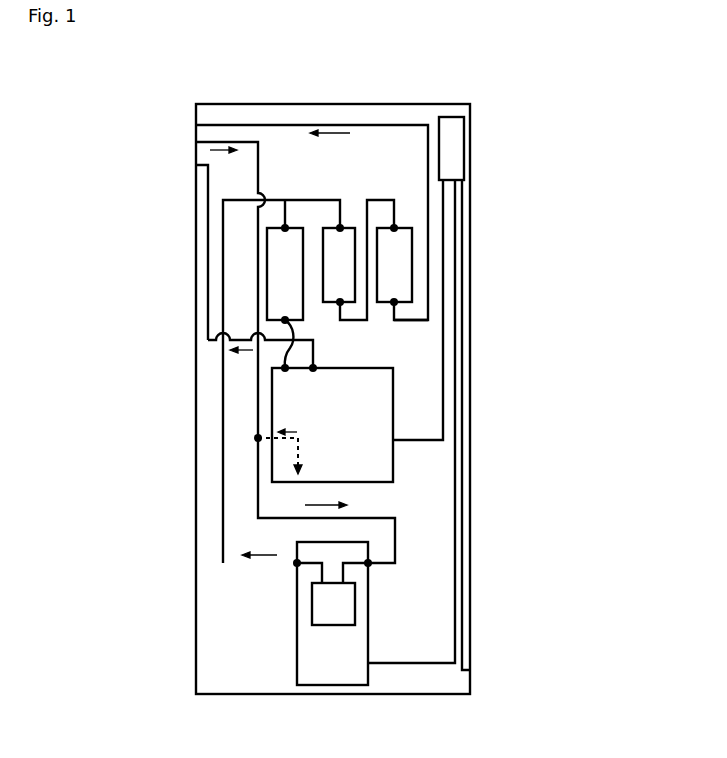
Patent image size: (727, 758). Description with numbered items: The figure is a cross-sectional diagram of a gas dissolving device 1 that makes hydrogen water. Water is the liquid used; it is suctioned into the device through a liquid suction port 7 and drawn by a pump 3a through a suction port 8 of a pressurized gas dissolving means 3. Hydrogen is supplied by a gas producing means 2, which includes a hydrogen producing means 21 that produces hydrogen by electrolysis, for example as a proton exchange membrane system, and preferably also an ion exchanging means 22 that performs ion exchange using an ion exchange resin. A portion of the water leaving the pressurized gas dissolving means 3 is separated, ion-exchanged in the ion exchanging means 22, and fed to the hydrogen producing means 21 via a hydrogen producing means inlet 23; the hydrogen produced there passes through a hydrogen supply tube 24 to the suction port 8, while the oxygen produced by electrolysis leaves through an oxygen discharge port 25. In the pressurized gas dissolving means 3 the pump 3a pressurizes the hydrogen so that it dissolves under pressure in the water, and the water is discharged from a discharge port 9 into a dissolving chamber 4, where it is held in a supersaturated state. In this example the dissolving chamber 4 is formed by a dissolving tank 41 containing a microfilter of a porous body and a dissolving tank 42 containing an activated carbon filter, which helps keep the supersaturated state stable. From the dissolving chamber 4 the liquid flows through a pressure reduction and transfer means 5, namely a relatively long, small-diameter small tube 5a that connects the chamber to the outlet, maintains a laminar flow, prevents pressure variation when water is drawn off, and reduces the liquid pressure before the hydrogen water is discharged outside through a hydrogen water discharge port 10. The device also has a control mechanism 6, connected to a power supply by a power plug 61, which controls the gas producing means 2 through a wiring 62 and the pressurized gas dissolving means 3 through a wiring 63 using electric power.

The gas dissolving device 1 is at (401, 86).
The gas producing means 2 is at (136, 300).
The hydrogen producing means 21 is at (270, 380).
The ion exchanging means 22 is at (267, 303).
The hydrogen producing means inlet 23 is at (290, 366).
The hydrogen supply tube 24 is at (293, 466).
The oxygen discharge port 25 is at (196, 165).
The pressurized gas dissolving means 3 is at (297, 630).
The pump 3a is at (333, 604).
The dissolving chamber 4 is at (522, 238).
The dissolving tank 41 is at (356, 257).
The dissolving tank 42 is at (413, 283).
The pressure reduction and transfer means 5 is at (319, 125).
The small tube 5a is at (333, 399).
The control mechanism 6 is at (458, 152).
The power plug 61 is at (470, 667).
The wiring 62 is at (444, 378).
The wiring 63 is at (405, 664).
The liquid suction port 7 is at (196, 142).
The suction port 8 is at (370, 566).
The discharge port 9 is at (296, 567).
The hydrogen water discharge port 10 is at (196, 125).